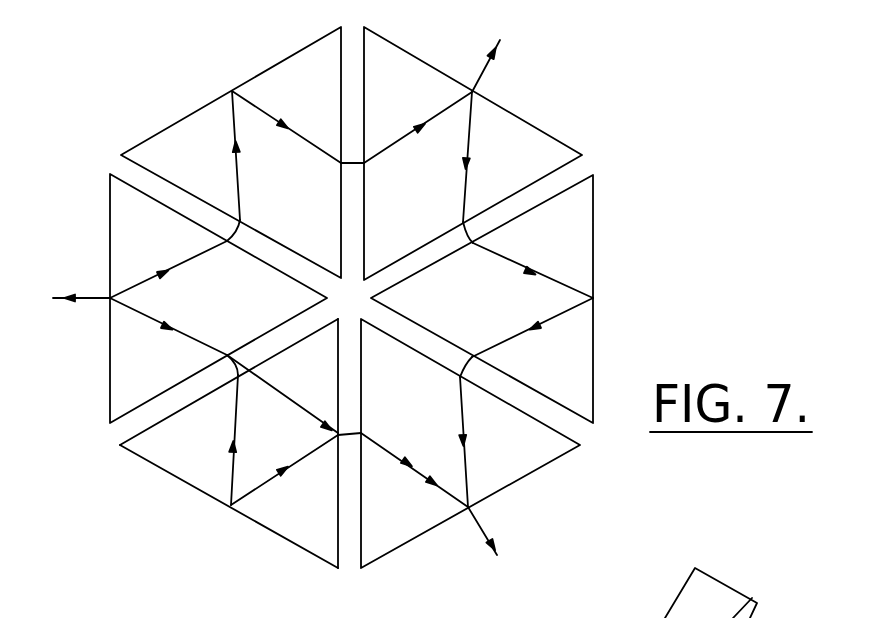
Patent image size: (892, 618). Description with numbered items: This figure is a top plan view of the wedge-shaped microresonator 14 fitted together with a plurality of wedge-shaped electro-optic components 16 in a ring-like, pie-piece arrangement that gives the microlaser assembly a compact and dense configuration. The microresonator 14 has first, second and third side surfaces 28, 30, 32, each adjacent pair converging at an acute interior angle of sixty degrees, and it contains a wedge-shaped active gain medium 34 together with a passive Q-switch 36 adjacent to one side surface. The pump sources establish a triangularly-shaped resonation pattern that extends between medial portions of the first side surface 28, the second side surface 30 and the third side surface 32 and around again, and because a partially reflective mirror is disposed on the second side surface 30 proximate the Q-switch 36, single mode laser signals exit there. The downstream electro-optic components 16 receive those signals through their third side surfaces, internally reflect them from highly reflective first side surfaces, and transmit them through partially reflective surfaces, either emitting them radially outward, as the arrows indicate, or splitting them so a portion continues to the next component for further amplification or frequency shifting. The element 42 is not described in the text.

The electro-optic component 16 is at (356, 297).
The microresonator 14 is at (207, 461).
The first side surface 28 is at (229, 506).
The second side surface 30 is at (207, 412).
The third side surface 32 is at (261, 456).
The active gain medium 34 is at (332, 405).
The Q-switch 36 is at (179, 448).
The housing 42 is at (740, 593).